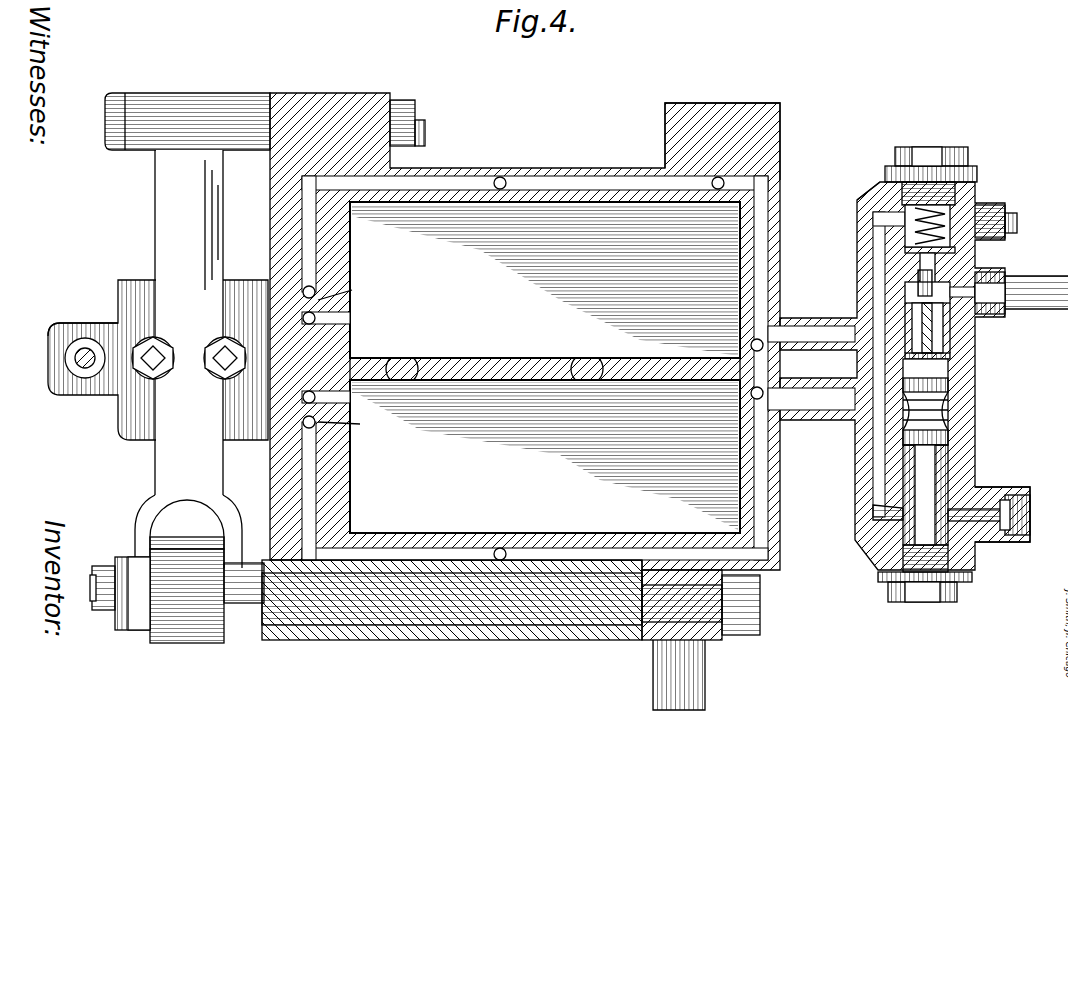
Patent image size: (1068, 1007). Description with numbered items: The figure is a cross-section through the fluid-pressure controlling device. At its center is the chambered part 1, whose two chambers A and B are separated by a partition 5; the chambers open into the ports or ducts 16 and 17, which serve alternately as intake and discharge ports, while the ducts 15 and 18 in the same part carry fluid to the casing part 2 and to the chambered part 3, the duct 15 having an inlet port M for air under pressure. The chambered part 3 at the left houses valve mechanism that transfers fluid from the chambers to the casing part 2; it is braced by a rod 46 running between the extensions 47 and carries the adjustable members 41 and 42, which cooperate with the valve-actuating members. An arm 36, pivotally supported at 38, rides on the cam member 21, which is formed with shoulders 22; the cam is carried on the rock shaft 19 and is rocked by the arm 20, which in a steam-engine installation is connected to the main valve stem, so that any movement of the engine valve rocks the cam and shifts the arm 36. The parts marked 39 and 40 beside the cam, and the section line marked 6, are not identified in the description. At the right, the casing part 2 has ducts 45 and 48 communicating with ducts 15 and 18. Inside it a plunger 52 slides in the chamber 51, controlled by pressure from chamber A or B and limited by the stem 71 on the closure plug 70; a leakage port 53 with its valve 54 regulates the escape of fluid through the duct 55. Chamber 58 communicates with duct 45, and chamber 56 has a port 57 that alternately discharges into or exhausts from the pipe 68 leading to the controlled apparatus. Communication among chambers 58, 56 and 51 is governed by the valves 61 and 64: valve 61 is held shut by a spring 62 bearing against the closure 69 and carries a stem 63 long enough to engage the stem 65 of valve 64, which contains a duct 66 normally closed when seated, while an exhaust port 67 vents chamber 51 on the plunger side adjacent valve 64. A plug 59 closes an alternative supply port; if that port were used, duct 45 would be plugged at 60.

The chambered part 1 is at (555, 170).
The casing part 2 is at (860, 222).
The chambered part 3 is at (133, 280).
The partition 5 is at (483, 80).
The boss / section line 6 is at (298, 61).
The duct 15 is at (315, 282).
The port or duct 16 is at (320, 320).
The port or duct 17 is at (320, 400).
The duct 18 is at (318, 486).
The rock shaft 19 is at (445, 615).
The arm 20 is at (705, 683).
The cam member 21 is at (175, 633).
The shoulders 22 is at (168, 590).
The arm 36 is at (165, 208).
The pivot 38 is at (102, 150).
The yoke 39 is at (145, 520).
The nut 40 is at (92, 582).
The adjustable member 41 is at (222, 363).
The adjustable member 42 is at (153, 355).
The duct 45 is at (962, 225).
The rod 46 is at (80, 363).
The extensions 47 is at (82, 323).
The duct 48 is at (813, 402).
The chamber 51 is at (948, 455).
The plunger 52 is at (935, 412).
The leakage port 53 is at (955, 505).
The valve 54 is at (1000, 508).
The duct 55 is at (1010, 540).
The chamber 56 is at (960, 290).
The port 57 is at (965, 305).
The chamber 58 is at (868, 190).
The plug 59 is at (1008, 220).
The plug location 60 is at (790, 320).
The valve 61 is at (875, 240).
The spring 62 is at (945, 185).
The stem 63 is at (918, 285).
The valve 64 is at (945, 360).
The stem 65 is at (932, 330).
The duct 66 is at (975, 328).
The exhaust port 67 is at (950, 352).
The pipe 68 is at (1020, 290).
The closure 69 is at (925, 182).
The closure plug 70 is at (920, 602).
The stem 71 is at (925, 500).